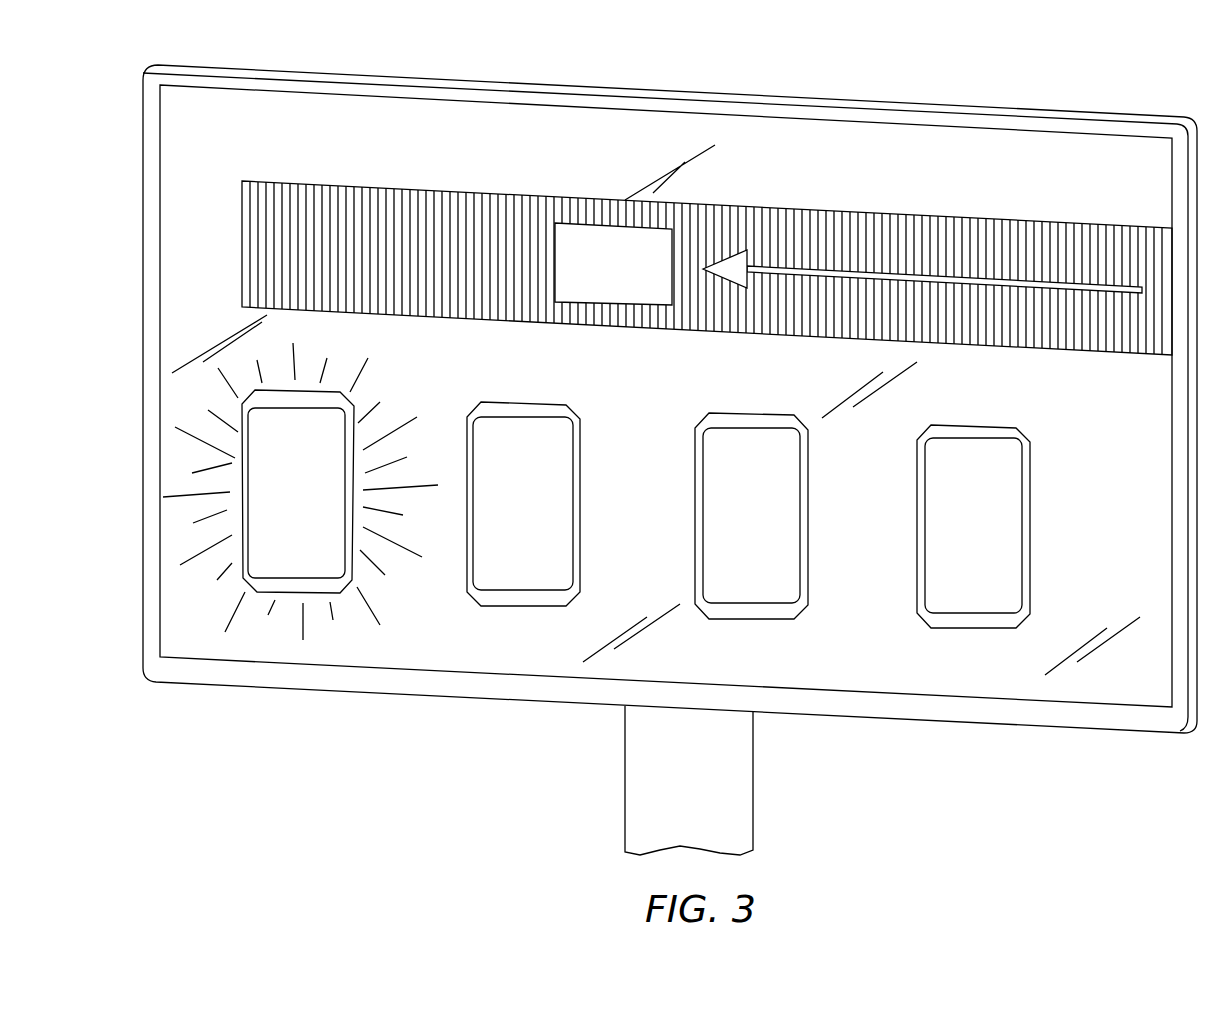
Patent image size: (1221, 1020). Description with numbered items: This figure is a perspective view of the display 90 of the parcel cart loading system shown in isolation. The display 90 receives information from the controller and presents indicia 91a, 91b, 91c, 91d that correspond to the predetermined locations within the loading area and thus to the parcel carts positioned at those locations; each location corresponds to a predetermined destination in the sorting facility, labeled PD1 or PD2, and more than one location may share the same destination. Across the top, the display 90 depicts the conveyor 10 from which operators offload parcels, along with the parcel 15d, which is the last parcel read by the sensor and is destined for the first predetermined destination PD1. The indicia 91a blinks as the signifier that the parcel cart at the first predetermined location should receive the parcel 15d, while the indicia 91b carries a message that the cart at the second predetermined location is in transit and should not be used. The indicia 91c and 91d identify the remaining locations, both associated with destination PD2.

The display 90 is at (510, 85).
The conveyor 10 is at (997, 221).
The parcel 15d is at (593, 222).
The indicia 91a is at (244, 578).
The indicia 91b is at (466, 432).
The indicia 91c is at (702, 420).
The indicia 91d is at (997, 425).